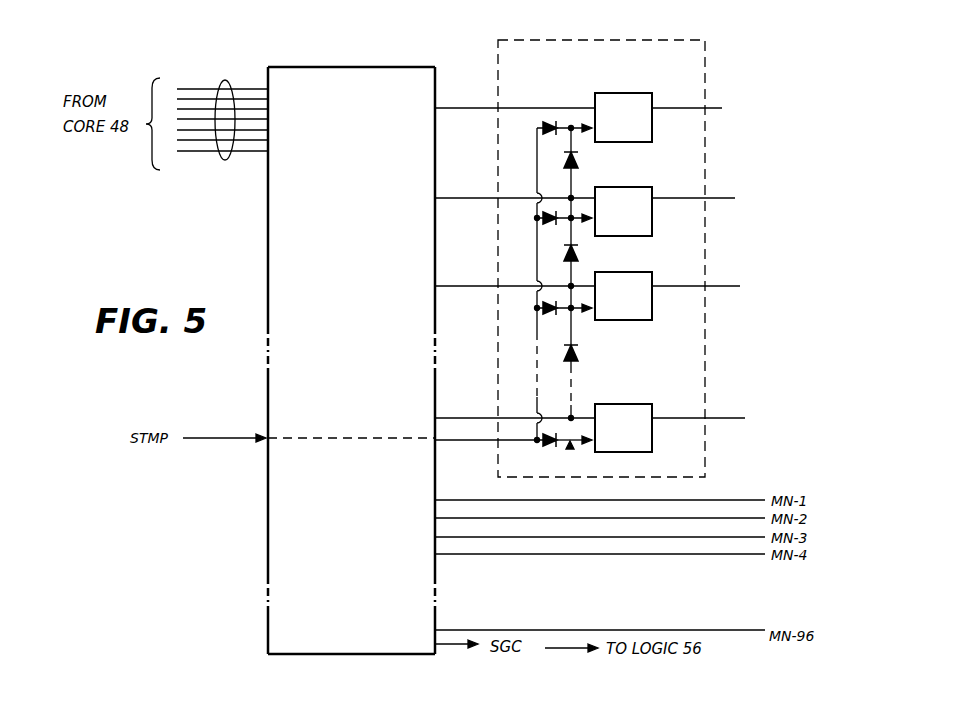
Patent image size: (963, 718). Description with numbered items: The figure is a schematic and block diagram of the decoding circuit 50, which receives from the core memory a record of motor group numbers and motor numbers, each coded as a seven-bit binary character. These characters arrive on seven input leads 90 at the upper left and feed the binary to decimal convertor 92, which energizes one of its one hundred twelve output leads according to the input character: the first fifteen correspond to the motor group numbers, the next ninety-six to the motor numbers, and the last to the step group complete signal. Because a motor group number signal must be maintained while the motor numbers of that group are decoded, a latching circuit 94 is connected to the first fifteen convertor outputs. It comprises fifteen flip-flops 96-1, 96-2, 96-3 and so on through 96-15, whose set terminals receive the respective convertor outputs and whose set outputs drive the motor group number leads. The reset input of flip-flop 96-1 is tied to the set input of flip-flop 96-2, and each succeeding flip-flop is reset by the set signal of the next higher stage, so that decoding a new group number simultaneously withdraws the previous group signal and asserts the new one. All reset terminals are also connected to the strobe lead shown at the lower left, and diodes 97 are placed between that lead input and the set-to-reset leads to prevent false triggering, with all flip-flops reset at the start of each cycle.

The decoding circuit 50 is at (453, 50).
The input leads 90 is at (233, 80).
The binary to decimal convertor 92 is at (335, 434).
The latching circuit 94 is at (683, 42).
The first motor group flip-flop 96-1 is at (652, 93).
The second motor group flip-flop 96-2 is at (652, 187).
The third motor group flip-flop 96-3 is at (652, 272).
The fifteenth motor group flip-flop 96-15 is at (662, 394).
The diodes 97 is at (547, 124).